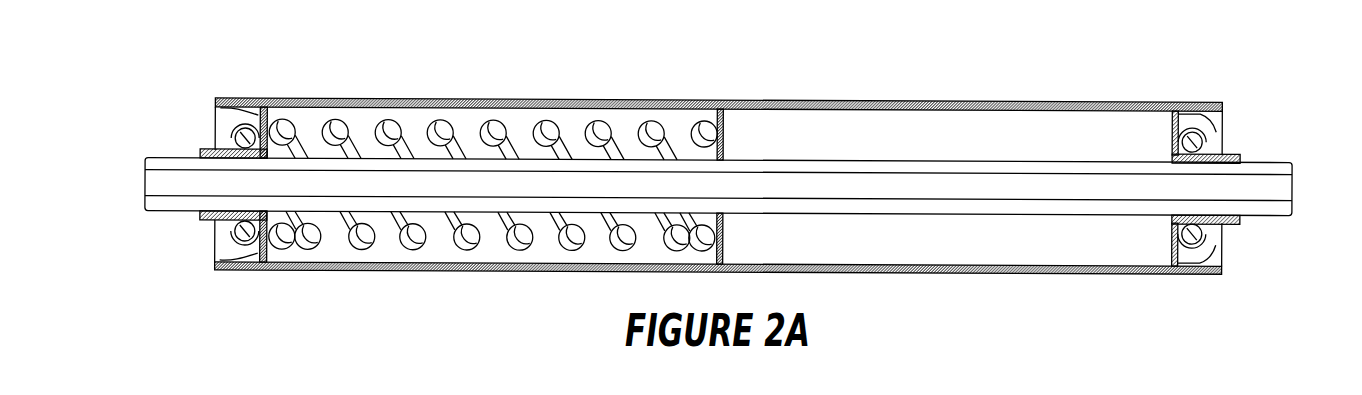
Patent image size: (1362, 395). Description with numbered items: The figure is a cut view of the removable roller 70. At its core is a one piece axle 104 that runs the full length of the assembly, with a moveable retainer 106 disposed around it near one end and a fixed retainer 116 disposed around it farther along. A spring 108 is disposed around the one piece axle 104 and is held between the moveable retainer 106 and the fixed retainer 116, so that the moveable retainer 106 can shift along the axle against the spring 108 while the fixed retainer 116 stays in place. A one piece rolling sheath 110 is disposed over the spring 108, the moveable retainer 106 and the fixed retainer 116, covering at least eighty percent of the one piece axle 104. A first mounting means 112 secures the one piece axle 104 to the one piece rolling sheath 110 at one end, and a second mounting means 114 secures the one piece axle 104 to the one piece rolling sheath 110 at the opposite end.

The removable roller 70 is at (126, 56).
The one piece axle 104 is at (958, 160).
The moveable retainer 106 is at (270, 107).
The spring 108 is at (505, 118).
The one piece rolling sheath 110 is at (822, 100).
The first mounting means 112 is at (217, 131).
The second mounting means 114 is at (1223, 138).
The fixed retainer 116 is at (727, 112).